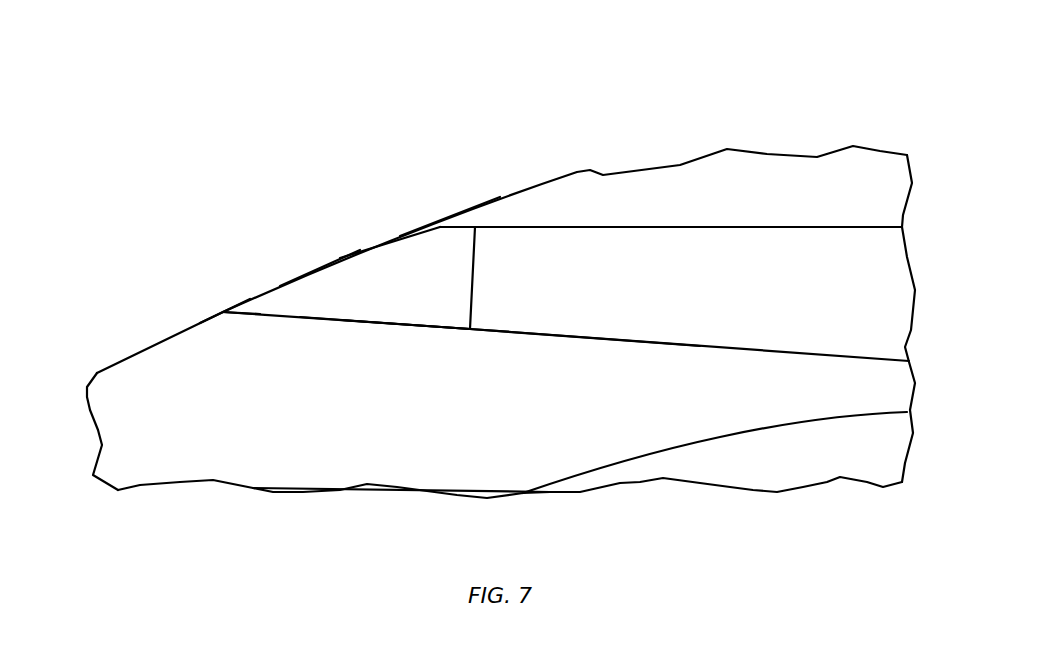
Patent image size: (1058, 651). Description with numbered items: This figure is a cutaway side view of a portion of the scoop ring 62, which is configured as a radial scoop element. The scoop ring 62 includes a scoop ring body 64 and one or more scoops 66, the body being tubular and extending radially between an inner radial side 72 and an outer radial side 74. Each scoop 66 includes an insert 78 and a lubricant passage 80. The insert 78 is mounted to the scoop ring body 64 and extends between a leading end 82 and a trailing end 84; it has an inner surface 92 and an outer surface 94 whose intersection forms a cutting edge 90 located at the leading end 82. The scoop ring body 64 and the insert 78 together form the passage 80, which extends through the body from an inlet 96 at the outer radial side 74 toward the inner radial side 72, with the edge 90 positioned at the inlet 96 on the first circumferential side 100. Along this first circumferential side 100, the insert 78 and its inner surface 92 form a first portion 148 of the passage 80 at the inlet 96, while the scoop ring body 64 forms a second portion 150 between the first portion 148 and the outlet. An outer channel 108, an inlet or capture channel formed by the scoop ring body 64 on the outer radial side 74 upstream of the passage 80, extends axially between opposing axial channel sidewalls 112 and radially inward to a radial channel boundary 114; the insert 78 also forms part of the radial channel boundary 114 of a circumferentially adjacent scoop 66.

The scoop ring 62 is at (918, 125).
The scoop ring body 64 is at (117, 402).
The scoop 66 is at (740, 200).
The inner radial side 72 is at (858, 510).
The outer radial side 74 is at (718, 135).
The insert 78 is at (383, 273).
The passage 80 is at (417, 445).
The leading end 82 is at (220, 290).
The trailing end 84 is at (492, 276).
The edge 90 is at (223, 312).
The inner surface 92 is at (303, 320).
The outer surface 94 is at (317, 268).
The inlet 96 is at (132, 340).
The first circumferential side 100 is at (573, 358).
The outer channel 108 is at (838, 227).
The axial channel sidewall 112 is at (455, 200).
The radial channel boundary 114 is at (603, 225).
The first portion 148 is at (368, 350).
The second portion 150 is at (665, 375).